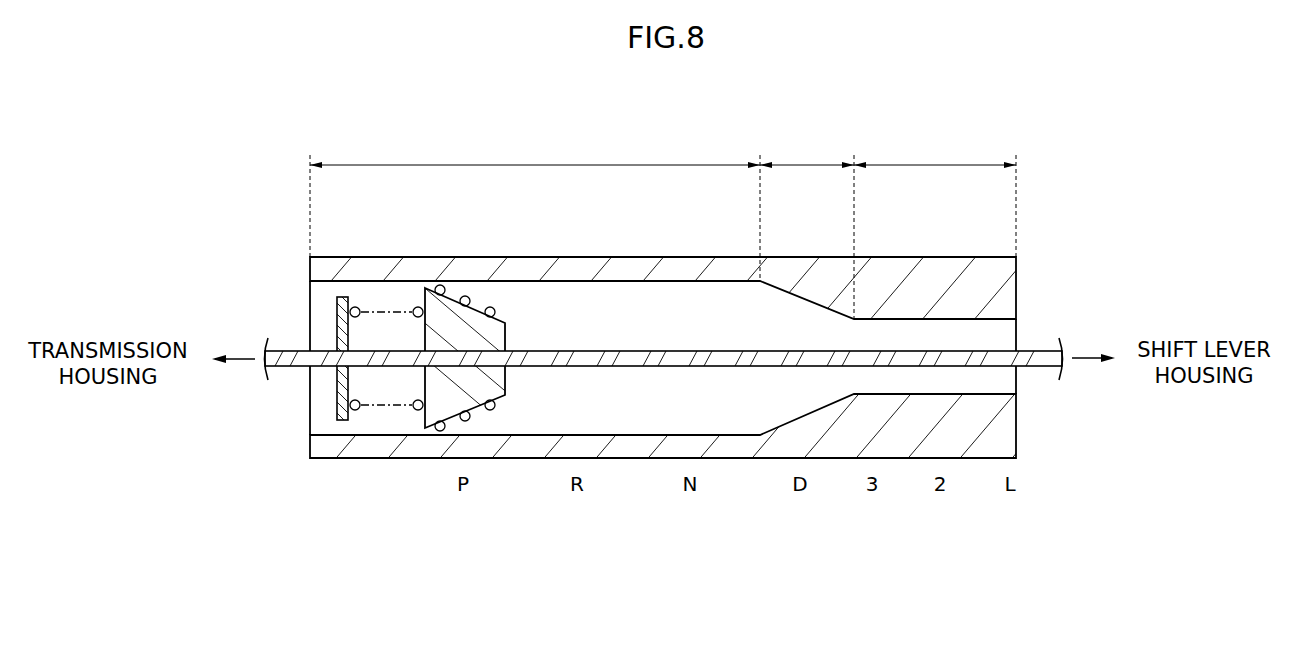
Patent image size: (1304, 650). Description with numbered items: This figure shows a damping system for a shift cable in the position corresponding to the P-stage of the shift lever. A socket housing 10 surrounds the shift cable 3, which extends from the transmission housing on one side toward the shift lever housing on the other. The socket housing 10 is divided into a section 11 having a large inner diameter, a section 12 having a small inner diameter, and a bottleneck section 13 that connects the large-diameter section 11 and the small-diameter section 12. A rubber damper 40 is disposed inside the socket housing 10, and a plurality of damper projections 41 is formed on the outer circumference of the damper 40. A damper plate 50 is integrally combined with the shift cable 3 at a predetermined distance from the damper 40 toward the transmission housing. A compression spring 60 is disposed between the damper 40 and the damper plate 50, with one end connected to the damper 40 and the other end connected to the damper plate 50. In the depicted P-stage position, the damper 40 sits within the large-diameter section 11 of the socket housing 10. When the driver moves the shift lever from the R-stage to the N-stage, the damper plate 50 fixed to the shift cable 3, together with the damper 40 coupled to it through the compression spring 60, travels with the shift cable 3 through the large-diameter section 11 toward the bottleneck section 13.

The shift cable 3 is at (657, 358).
The socket housing 10 is at (745, 462).
The section having a large inner diameter 11 is at (535, 210).
The section having a small inner diameter 12 is at (935, 198).
The bottleneck section 13 is at (807, 229).
The rubber damper 40 is at (502, 380).
The damper projections 41 is at (466, 295).
The damper plate 50 is at (333, 383).
The compression spring 60 is at (387, 410).